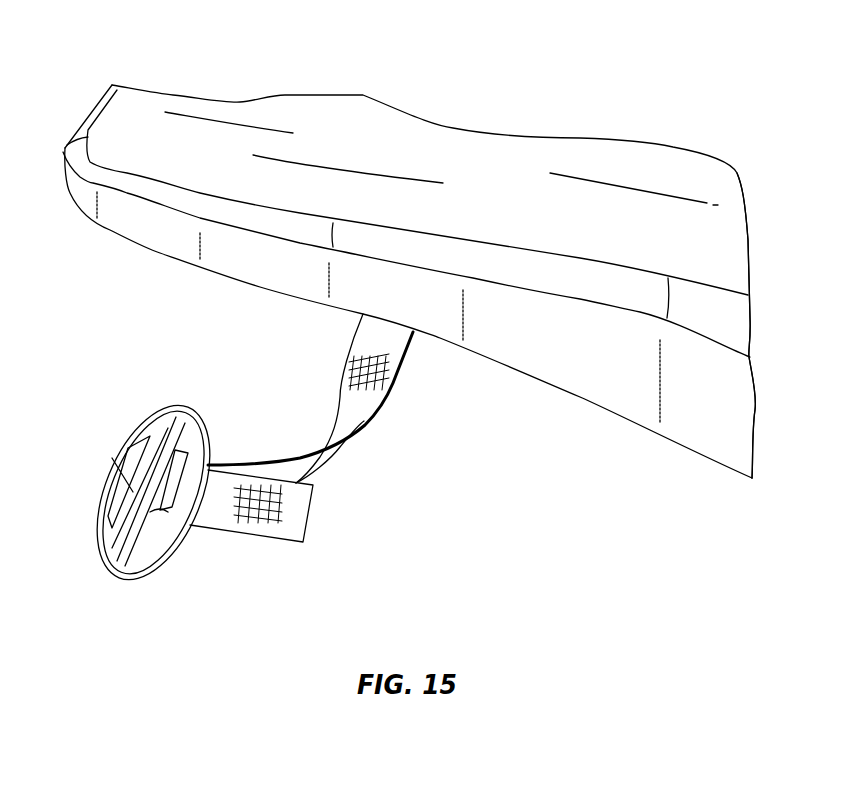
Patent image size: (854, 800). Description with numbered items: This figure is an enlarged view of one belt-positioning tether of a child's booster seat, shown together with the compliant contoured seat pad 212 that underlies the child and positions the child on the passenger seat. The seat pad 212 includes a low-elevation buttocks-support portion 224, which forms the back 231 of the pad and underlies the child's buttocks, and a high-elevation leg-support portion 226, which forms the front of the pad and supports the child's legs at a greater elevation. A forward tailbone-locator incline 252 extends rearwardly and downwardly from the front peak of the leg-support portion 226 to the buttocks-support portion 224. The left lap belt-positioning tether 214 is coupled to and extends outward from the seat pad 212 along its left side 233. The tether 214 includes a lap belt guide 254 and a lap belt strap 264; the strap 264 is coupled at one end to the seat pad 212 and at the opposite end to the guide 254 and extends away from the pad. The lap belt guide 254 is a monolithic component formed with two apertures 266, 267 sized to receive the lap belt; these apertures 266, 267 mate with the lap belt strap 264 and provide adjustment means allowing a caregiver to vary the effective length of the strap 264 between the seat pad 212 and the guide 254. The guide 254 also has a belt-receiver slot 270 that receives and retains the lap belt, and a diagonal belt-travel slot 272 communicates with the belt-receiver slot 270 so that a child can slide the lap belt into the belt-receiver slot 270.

The compliant contoured seat pad 212 is at (509, 143).
The left lap belt-positioning tether 214 is at (347, 470).
The low-elevation buttocks-support portion 224 is at (155, 127).
The high-elevation leg-support portion 226 is at (727, 240).
The back 231 is at (91, 108).
The left side 233 is at (170, 237).
The forward tailbone-locator incline 252 is at (628, 167).
The lap belt guide 254 is at (148, 579).
The lap belt strap 264 is at (372, 424).
The aperture 266 is at (153, 522).
The aperture 267 is at (172, 527).
The belt-receiver slot 270 is at (157, 437).
The diagonal belt-travel slot 272 is at (110, 452).